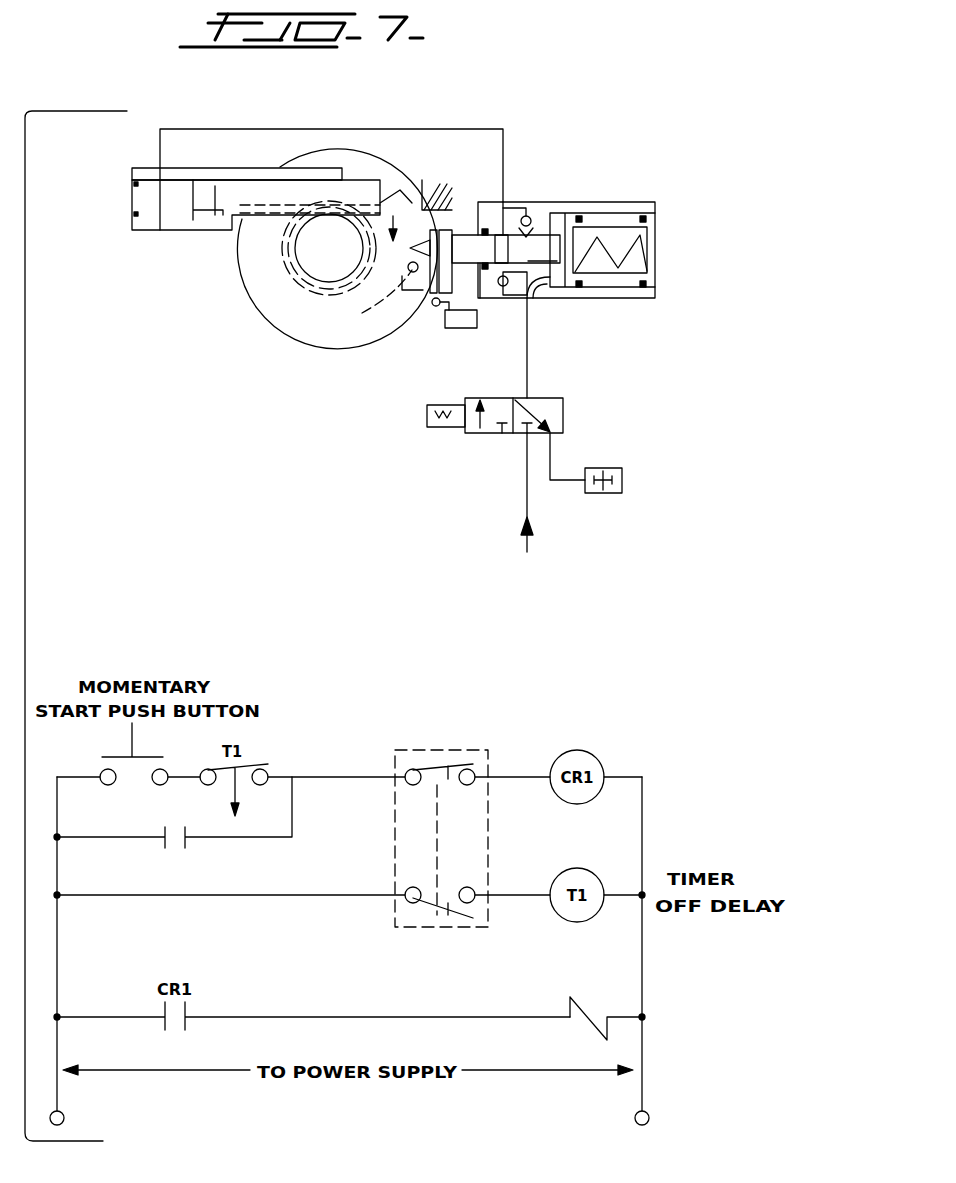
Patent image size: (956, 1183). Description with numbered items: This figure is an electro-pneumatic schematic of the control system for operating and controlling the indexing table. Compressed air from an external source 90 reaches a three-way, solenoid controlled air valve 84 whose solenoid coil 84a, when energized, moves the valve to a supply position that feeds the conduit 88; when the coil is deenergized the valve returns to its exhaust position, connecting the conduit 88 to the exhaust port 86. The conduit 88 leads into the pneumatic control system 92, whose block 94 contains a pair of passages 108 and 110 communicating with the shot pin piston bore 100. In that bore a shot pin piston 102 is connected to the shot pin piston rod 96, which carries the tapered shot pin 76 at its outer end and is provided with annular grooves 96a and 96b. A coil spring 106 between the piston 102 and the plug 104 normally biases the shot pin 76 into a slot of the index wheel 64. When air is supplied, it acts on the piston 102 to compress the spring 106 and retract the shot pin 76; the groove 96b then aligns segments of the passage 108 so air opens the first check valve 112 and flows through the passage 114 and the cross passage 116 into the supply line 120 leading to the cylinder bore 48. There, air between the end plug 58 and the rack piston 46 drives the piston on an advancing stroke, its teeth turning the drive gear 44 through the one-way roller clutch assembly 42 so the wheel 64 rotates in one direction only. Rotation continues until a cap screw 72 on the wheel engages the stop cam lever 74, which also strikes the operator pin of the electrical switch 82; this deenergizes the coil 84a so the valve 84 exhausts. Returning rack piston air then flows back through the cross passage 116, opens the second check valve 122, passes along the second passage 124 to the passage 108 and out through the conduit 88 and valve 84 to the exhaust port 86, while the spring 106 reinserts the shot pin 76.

The supply line 120 is at (234, 129).
The end plug 58 is at (133, 192).
The cylinder bore 48 is at (163, 202).
The rack piston 46 is at (206, 197).
The drive gear 44 is at (290, 252).
The one-way roller clutch assembly 42 is at (292, 268).
The index wheel 64 is at (262, 315).
The shot pin 76 is at (412, 250).
The cap screw 72 is at (374, 303).
The stop cam lever 74 is at (412, 293).
The electrical switch 82 is at (446, 318).
The annular groove 96a is at (432, 218).
The annular groove 96b is at (498, 262).
The cross passage 116 is at (498, 220).
The passage 114 is at (503, 208).
The first check valve 112 is at (529, 215).
The block 94 is at (561, 203).
The coil spring 106 is at (648, 250).
The plug 104 is at (650, 267).
The shot pin piston rod 96 is at (495, 261).
The shot pin piston 102 is at (568, 280).
The pneumatic control system 92 is at (707, 326).
The shot pin piston bore 100 is at (547, 283).
The passage 110 is at (537, 290).
The passage 108 is at (535, 300).
The second passage 124 is at (503, 286).
The second check valve 122 is at (498, 268).
The conduit 88 is at (527, 372).
The solenoid coil 84a is at (427, 418).
The three-way solenoid controlled air valve 84 is at (563, 415).
The external source 90 is at (527, 485).
The exhaust port 86 is at (605, 494).